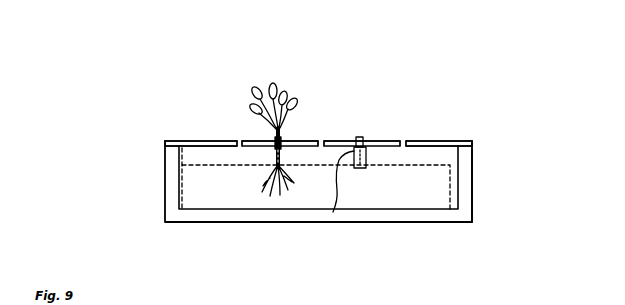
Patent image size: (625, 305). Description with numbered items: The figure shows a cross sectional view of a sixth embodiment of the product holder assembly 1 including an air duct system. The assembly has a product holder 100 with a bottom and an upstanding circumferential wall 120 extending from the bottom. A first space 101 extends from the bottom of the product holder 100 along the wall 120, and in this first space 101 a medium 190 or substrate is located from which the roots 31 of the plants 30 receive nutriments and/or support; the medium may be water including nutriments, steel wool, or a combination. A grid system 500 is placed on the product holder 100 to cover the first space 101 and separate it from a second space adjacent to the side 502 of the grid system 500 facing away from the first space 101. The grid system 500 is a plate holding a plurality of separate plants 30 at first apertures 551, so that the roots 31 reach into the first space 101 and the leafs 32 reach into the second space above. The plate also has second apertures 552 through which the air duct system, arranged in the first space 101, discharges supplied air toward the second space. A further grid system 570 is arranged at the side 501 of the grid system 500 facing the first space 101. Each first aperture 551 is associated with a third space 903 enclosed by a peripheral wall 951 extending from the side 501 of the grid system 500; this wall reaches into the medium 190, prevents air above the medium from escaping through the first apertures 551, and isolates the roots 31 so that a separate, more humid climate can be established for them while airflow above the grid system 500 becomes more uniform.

The product holder assembly 1 is at (437, 247).
The plant 30 is at (240, 141).
The roots 31 is at (264, 195).
The leafs 32 is at (256, 90).
The product holder 100 is at (465, 215).
The first space 101 is at (453, 148).
The upstanding circumferential wall 120 is at (463, 202).
The medium 190 is at (208, 197).
The grid system 500 is at (173, 140).
The side of the grid system facing the first space 501 is at (184, 147).
The side of the grid system facing away from the first space 502 is at (211, 140).
The first apertures 551 is at (301, 140).
The second apertures 552 is at (239, 141).
The further grid system 570 is at (191, 149).
The third space 903 is at (366, 151).
The peripheral wall 951 is at (333, 212).